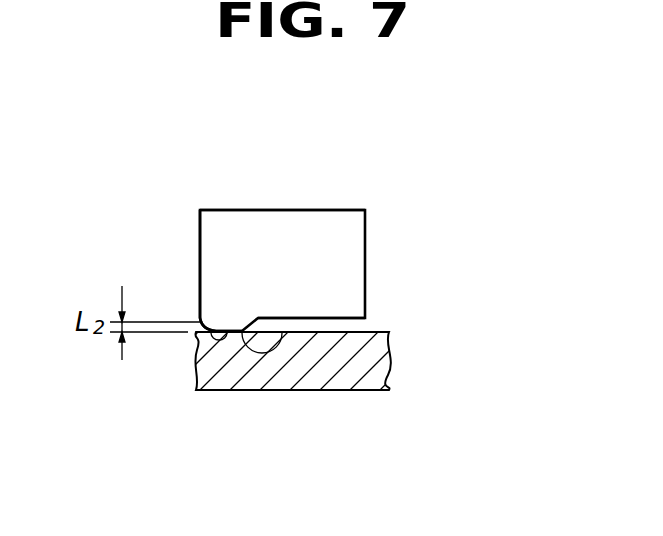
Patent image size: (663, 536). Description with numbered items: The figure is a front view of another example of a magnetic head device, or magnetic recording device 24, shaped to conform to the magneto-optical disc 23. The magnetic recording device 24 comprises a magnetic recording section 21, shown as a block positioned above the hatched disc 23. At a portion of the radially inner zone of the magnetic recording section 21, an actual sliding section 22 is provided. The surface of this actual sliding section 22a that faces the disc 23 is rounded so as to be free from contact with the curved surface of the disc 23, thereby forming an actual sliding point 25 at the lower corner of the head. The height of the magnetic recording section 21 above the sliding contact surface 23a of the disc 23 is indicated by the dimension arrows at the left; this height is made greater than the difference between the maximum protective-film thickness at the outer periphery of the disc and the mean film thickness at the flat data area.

The magnetic recording section 21 is at (328, 230).
The actual sliding section 22 is at (200, 313).
The actual sliding section 22a is at (281, 332).
The magneto-optical disc 23 is at (327, 370).
The sliding contact surface 23a is at (370, 330).
The magnetic recording device 24 is at (380, 252).
The actual sliding point 25 is at (212, 330).